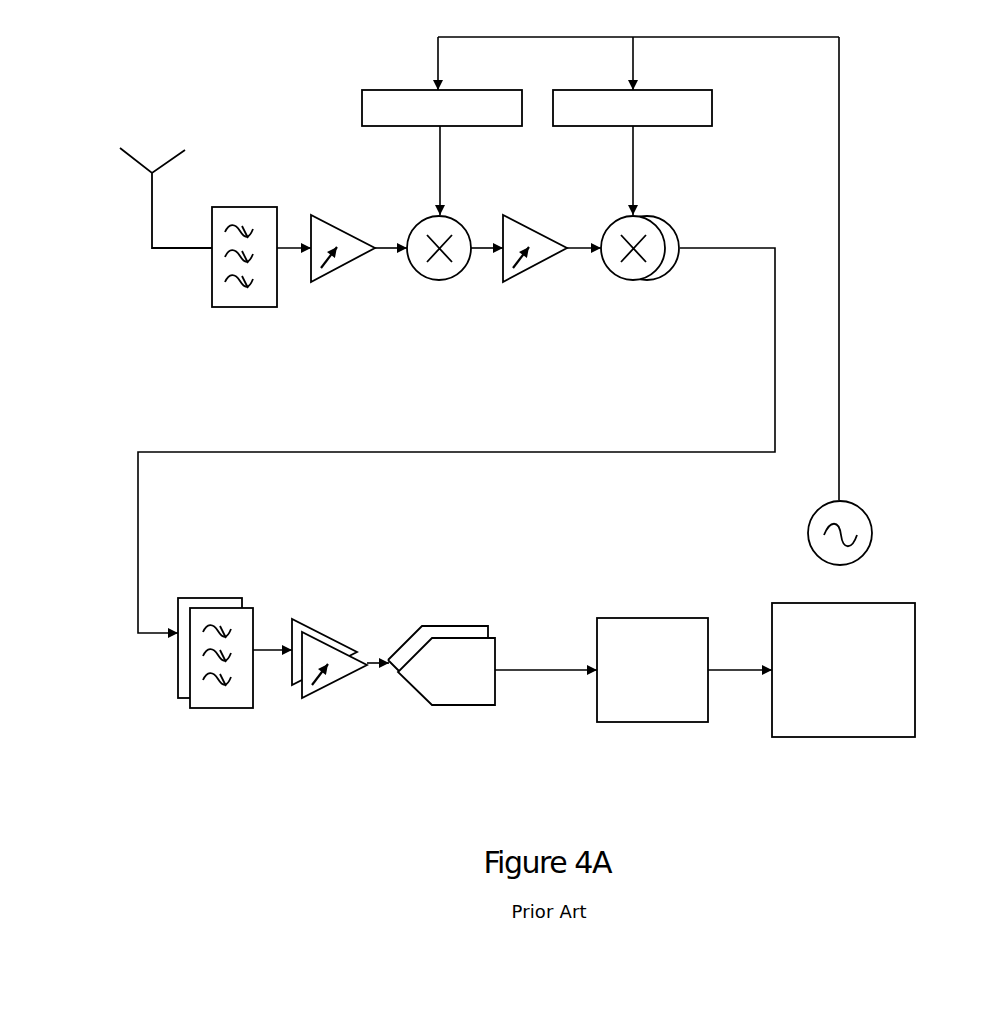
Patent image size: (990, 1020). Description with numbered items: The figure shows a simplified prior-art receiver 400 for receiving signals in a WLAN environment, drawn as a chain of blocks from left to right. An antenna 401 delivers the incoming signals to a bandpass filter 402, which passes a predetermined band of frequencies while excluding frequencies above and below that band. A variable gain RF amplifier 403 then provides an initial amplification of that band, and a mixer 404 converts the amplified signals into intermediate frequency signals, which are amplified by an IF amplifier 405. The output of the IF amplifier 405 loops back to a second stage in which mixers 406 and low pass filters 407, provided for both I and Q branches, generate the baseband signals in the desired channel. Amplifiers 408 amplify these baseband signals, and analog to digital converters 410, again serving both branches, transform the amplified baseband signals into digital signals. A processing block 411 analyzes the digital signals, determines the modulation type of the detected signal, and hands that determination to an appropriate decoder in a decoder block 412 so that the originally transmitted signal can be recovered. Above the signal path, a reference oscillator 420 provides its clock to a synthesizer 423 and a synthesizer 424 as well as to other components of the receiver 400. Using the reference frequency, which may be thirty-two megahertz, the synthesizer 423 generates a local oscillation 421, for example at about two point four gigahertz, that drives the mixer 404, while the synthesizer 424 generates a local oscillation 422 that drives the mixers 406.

The receiver 400 is at (905, 267).
The antenna 401 is at (166, 184).
The bandpass filter 402 is at (245, 308).
The variable gain RF amplifier 403 is at (347, 265).
The mixer 404 is at (445, 280).
The IF amplifier 405 is at (538, 265).
The mixers 406 is at (635, 280).
The low pass filters 407 is at (227, 598).
The amplifiers 408 is at (314, 692).
The analog to digital converters 410 is at (441, 665).
The processing block 411 is at (652, 670).
The decoder block 412 is at (843, 670).
The reference oscillator 420 is at (703, 301).
The local oscillation 421 is at (356, 170).
The local oscillation 422 is at (719, 170).
The synthesizer 423 is at (442, 108).
The synthesizer 424 is at (632, 108).